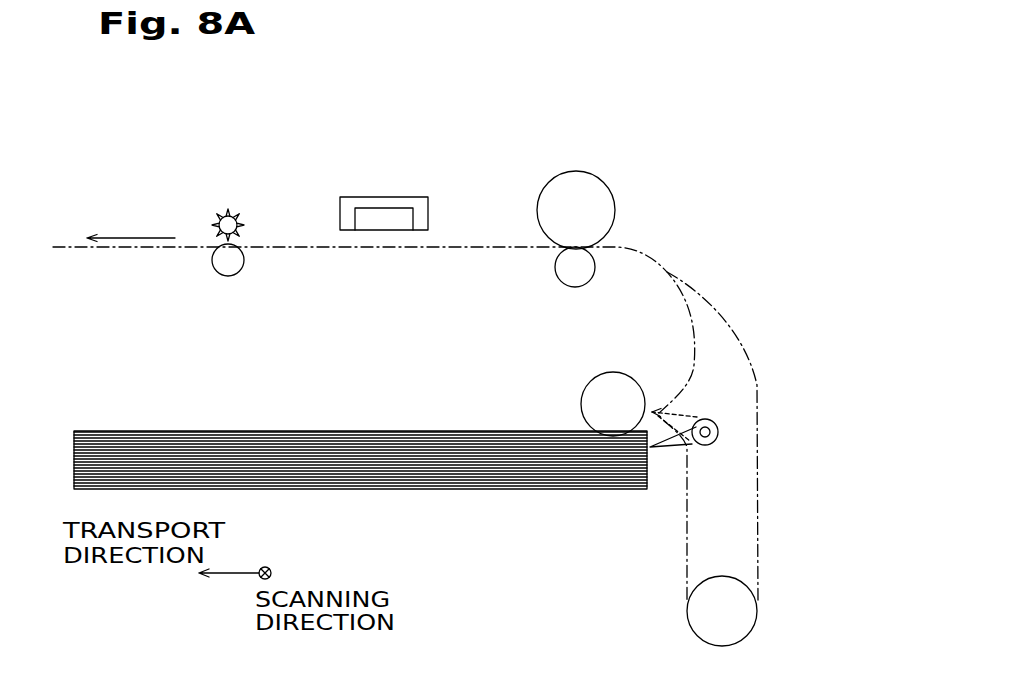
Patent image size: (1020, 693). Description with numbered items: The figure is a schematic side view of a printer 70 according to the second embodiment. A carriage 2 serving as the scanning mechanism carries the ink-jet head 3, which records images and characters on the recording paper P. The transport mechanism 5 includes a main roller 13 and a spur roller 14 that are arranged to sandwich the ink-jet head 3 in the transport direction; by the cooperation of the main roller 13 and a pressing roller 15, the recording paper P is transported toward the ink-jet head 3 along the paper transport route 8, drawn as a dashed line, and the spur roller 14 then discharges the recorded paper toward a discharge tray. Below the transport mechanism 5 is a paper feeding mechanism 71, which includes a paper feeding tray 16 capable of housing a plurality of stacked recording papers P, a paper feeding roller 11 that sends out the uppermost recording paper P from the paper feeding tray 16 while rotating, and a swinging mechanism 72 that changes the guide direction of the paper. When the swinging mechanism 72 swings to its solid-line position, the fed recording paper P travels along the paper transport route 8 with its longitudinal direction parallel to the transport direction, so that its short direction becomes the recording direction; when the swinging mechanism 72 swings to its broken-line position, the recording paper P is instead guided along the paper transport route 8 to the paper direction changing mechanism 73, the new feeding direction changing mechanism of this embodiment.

The carriage 2 is at (382, 197).
The ink-jet head 3 is at (413, 219).
The transport mechanism 5 is at (622, 214).
The paper transport route 8 is at (667, 267).
The paper feeding roller 11 is at (646, 402).
The main roller 13 is at (612, 193).
The spur roller 14 is at (223, 209).
The pressing roller 15 is at (589, 281).
The paper feeding tray 16 is at (647, 468).
The printer 70 is at (703, 350).
The paper feeding mechanism 71 is at (730, 359).
The swinging mechanism 72 is at (718, 430).
The paper direction changing mechanism 73 is at (652, 578).
The recording paper P is at (466, 431).